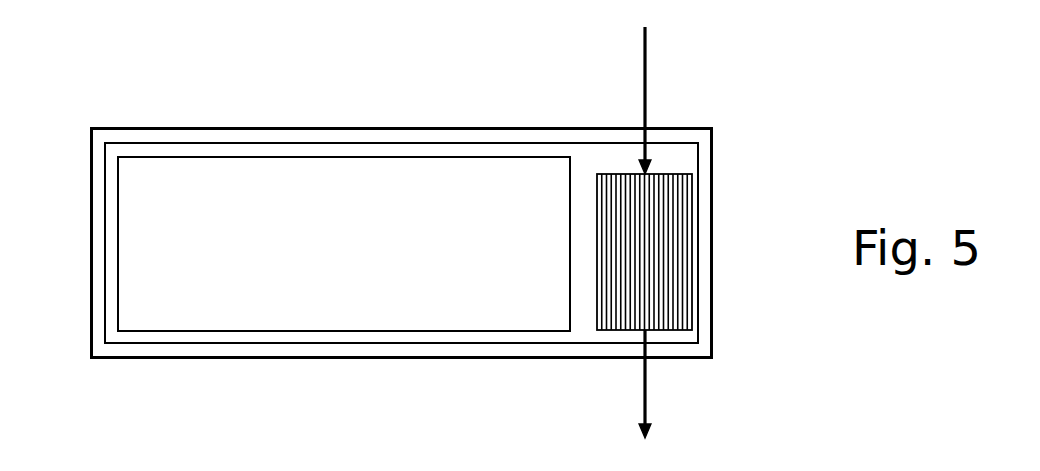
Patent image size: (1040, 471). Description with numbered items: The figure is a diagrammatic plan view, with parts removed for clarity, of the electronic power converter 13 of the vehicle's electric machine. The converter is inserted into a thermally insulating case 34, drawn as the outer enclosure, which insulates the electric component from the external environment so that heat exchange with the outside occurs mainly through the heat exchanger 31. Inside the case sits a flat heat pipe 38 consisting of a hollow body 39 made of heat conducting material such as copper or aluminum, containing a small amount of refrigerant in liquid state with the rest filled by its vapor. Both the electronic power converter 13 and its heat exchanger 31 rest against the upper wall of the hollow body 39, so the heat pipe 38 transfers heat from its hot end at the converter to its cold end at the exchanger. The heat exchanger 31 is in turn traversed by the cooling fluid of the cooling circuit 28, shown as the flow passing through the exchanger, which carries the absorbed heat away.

The electronic power converter 13 is at (344, 244).
The cooling circuit 28 is at (645, 67).
The heat exchanger 31 is at (678, 222).
The thermally insulating case 34 is at (103, 127).
The heat pipe 38 is at (326, 380).
The hollow body 39 is at (471, 337).